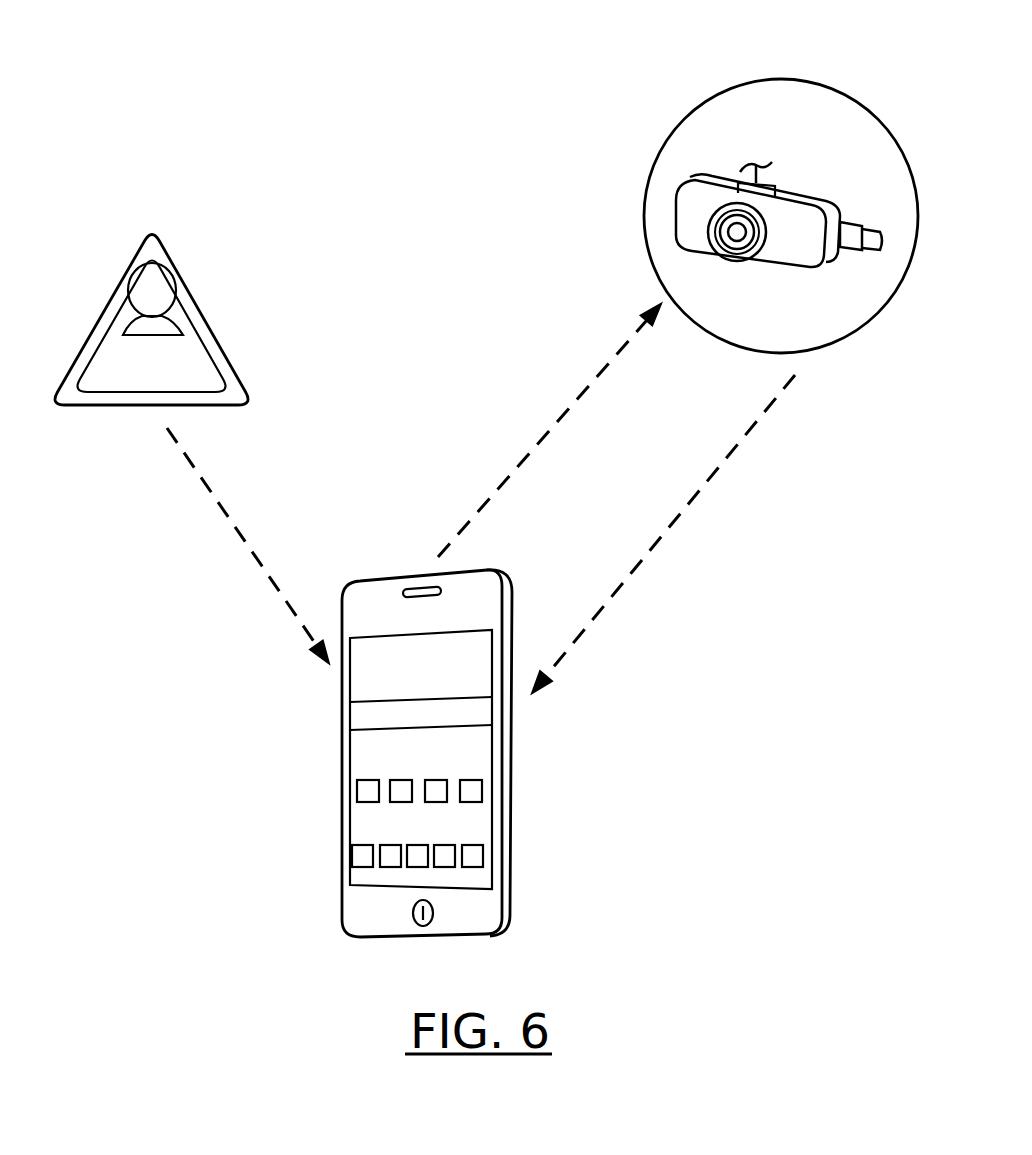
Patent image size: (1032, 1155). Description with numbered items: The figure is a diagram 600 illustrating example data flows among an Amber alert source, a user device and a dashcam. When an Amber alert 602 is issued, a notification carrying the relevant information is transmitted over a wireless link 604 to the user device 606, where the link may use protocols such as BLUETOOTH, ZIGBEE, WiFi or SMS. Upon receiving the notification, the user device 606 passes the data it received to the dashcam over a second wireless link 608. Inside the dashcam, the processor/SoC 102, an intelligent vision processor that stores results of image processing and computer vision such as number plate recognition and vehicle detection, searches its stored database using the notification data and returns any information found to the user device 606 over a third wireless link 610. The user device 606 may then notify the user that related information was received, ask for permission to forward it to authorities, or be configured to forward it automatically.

The alert notification system 600 is at (342, 45).
The Amber alert 602 is at (103, 302).
The wireless link 604 is at (224, 512).
The user device 606 is at (395, 578).
The wireless link 608 is at (563, 418).
The wireless link 610 is at (672, 520).
The processor/SoC 102 is at (800, 190).